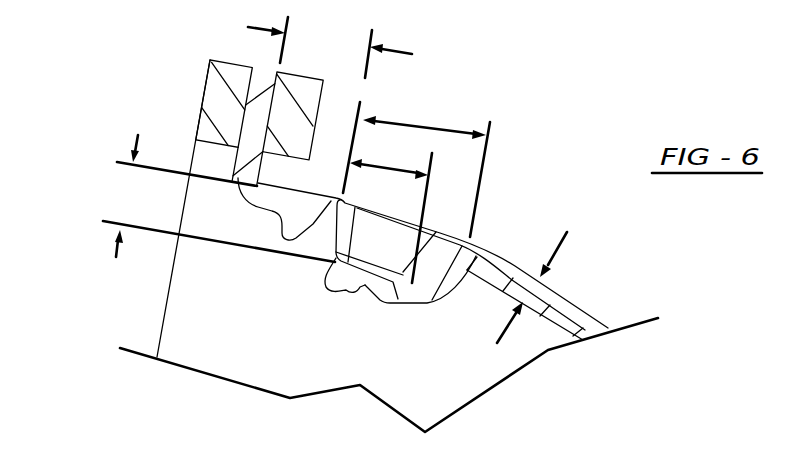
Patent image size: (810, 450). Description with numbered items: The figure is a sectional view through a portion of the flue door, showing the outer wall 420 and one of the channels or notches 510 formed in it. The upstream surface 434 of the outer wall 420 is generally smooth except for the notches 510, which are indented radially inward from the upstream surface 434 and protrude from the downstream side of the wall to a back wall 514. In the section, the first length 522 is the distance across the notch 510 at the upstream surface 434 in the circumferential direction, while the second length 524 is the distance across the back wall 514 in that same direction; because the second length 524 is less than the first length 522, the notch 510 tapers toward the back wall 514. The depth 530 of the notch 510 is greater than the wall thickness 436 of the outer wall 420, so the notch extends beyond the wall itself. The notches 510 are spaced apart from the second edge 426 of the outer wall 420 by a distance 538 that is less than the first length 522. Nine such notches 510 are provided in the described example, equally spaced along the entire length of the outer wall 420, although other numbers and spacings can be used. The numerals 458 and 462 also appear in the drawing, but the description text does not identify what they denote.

The outer wall 420 is at (500, 273).
The second edge 426 is at (263, 72).
The upstream surface 434 is at (500, 258).
The wall thickness 436 is at (560, 247).
The right block portion 458 is at (323, 90).
The left block portion 462 is at (212, 113).
The notches 510 is at (384, 312).
The back wall 514 is at (373, 283).
The first length 522 is at (407, 123).
The second length 524 is at (407, 173).
The depth 530 is at (117, 248).
The distance 538 is at (398, 52).